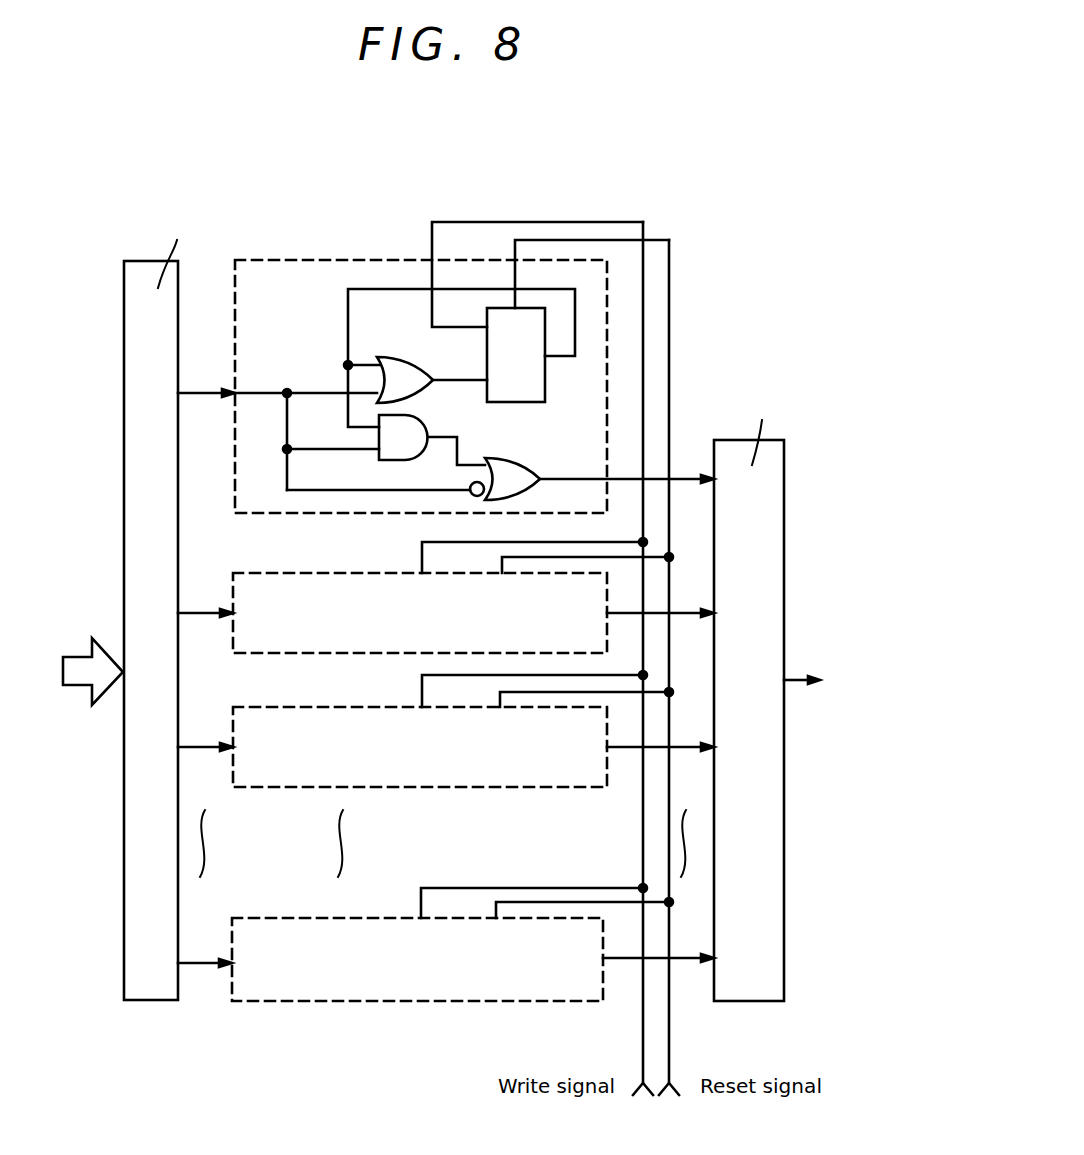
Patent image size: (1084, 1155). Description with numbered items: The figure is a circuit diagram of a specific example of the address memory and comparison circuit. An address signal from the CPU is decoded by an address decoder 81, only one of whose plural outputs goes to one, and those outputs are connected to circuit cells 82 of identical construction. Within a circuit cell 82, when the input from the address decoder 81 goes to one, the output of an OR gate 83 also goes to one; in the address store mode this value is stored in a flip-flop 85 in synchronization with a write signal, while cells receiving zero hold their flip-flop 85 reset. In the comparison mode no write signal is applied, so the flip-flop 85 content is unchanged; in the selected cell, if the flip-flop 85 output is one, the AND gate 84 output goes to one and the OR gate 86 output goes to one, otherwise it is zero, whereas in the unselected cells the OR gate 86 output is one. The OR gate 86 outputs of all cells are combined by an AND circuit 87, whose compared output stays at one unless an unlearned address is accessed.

The address decoder 81 is at (143, 1002).
The circuit cell 82 is at (314, 256).
The OR gate 83 is at (398, 356).
The AND gate 84 is at (430, 420).
The flip-flop 85 is at (546, 388).
The OR gate 86 is at (530, 463).
The AND circuit 87 is at (740, 1003).